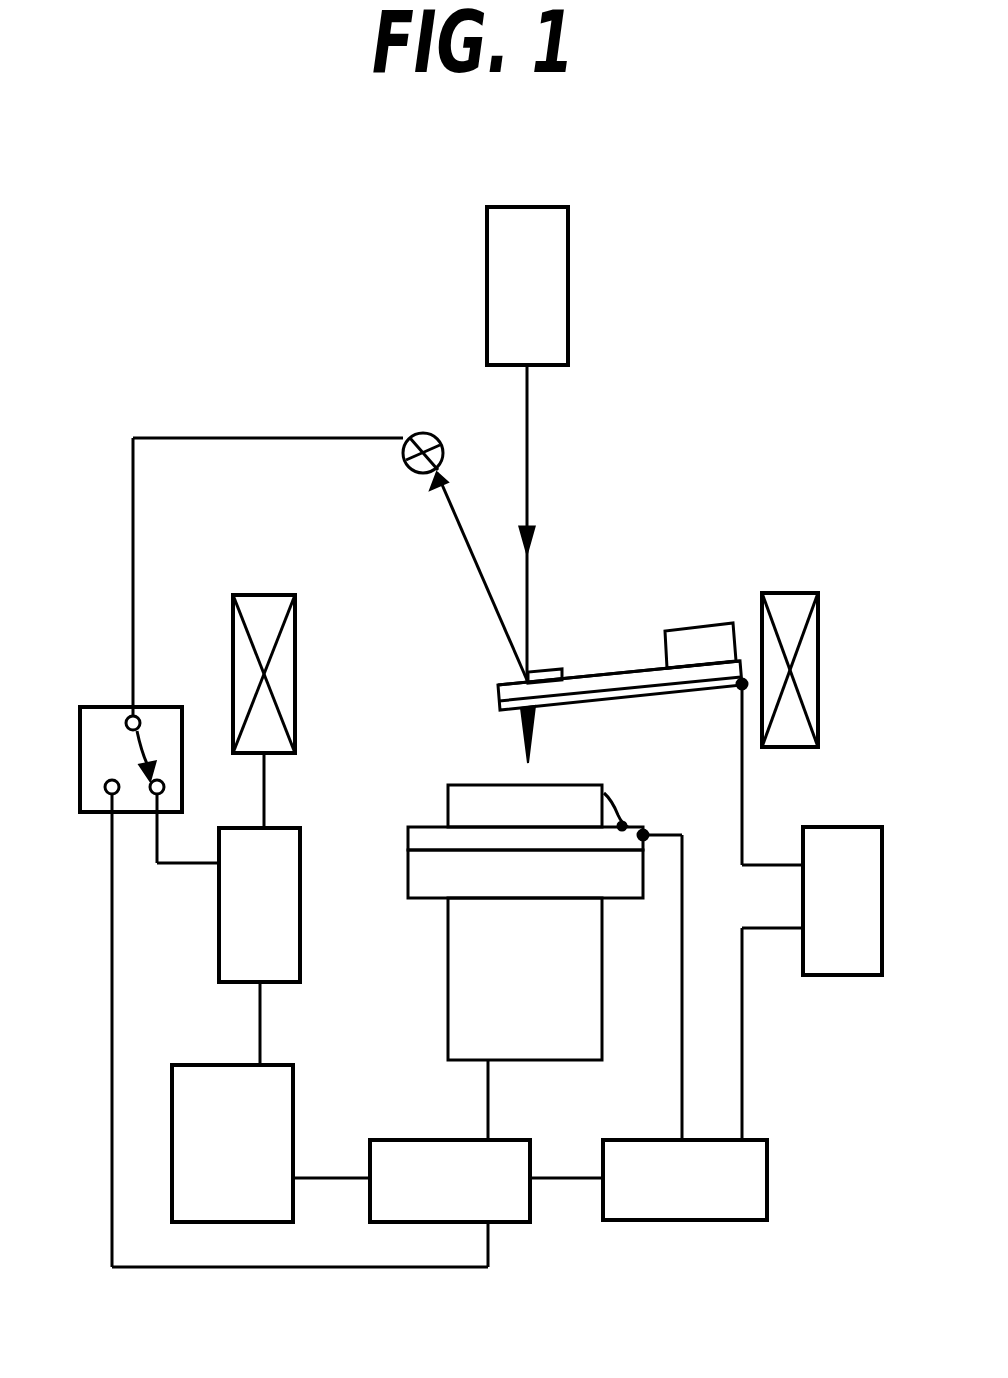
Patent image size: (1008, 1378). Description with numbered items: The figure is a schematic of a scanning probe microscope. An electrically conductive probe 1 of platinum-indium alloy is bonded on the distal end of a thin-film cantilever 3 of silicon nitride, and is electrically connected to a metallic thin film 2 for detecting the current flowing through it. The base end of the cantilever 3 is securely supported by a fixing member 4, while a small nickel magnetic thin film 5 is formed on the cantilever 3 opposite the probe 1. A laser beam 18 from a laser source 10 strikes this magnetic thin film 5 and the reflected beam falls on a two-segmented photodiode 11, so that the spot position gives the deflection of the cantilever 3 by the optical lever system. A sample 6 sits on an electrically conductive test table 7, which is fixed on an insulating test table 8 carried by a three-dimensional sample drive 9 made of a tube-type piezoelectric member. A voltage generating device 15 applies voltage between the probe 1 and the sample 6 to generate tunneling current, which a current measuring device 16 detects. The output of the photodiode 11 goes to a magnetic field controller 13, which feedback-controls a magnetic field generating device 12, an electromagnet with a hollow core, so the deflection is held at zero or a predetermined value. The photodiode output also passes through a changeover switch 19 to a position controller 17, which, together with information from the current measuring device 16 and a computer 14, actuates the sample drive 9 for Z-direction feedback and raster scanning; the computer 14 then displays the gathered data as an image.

The electrically conductive probe 1 is at (520, 740).
The metallic thin film 2 is at (648, 695).
The thin-film cantilever 3 is at (604, 680).
The fixing member 4 is at (694, 648).
The magnetic thin film 5 is at (548, 680).
The sample 6 is at (455, 805).
The electrically conductive test table 7 is at (412, 838).
The insulating test table 8 is at (415, 884).
The three-dimensional sample drive 9 is at (458, 1006).
The laser source 10 is at (527, 286).
The two-segmented photodiode 11 is at (425, 434).
The magnetic field generating device 12 is at (268, 597).
The magnetic field controller 13 is at (259, 946).
The computer 14 is at (271, 1143).
The voltage generating device 15 is at (812, 829).
The current measuring device 16 is at (685, 1027).
The position controller 17 is at (486, 1141).
The laser beam 18 is at (527, 462).
The changeover switch 19 is at (96, 706).